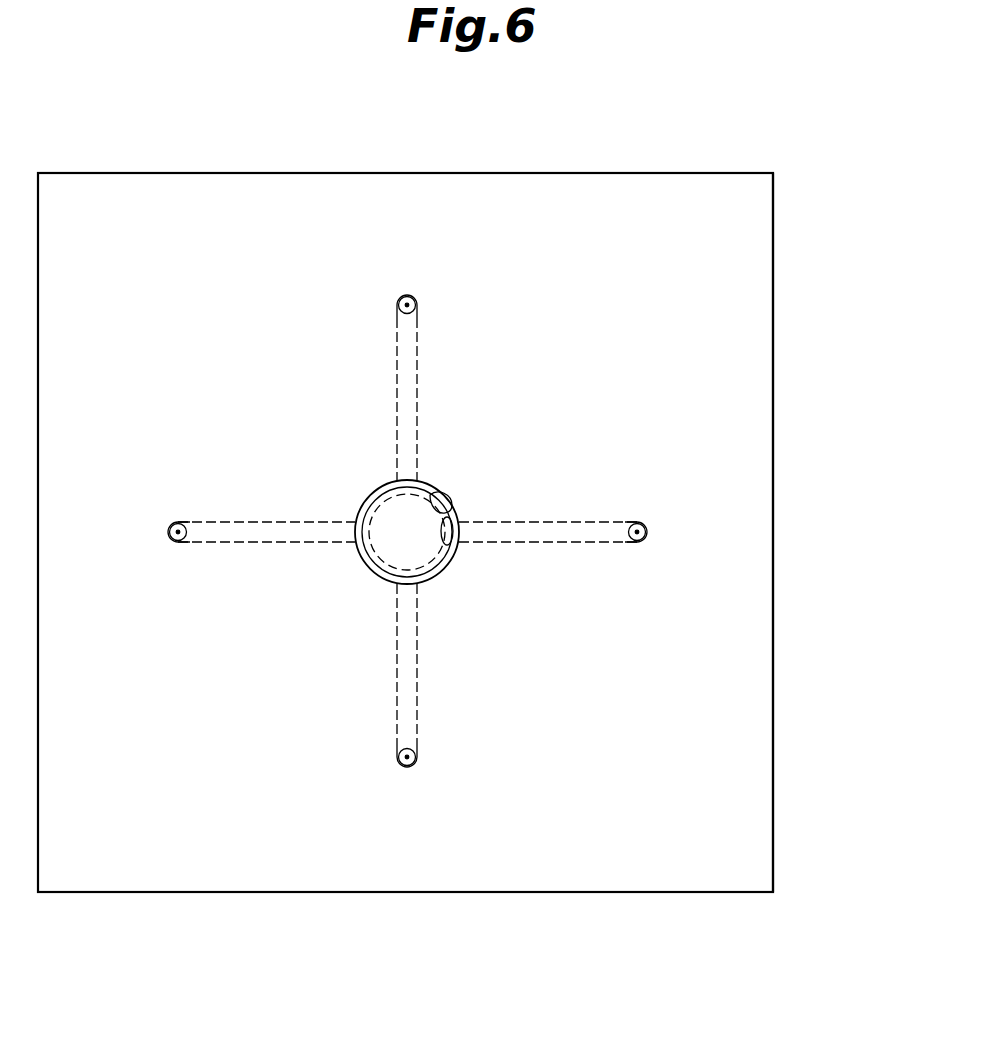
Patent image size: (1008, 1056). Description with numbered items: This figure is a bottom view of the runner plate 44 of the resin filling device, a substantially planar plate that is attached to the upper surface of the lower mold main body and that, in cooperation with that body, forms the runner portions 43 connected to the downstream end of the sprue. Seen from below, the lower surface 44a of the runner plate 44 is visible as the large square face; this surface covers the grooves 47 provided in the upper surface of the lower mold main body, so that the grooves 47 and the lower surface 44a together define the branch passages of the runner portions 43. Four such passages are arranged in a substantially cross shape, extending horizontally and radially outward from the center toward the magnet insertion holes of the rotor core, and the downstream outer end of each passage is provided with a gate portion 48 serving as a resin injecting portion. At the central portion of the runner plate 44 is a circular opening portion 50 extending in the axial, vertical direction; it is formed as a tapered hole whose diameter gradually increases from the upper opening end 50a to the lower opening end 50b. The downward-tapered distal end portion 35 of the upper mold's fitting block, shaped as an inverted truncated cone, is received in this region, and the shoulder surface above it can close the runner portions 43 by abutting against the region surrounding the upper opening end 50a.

The runner plate 44 is at (551, 172).
The lower surface of the runner plate 44a is at (752, 613).
The runner portions 43 is at (314, 524).
The grooves 47 is at (418, 400).
The gate portion 48 is at (415, 305).
The distal end portion 35 is at (362, 483).
The opening portion 50 is at (433, 507).
The lower opening end 50b is at (450, 500).
The upper opening end 50a is at (455, 548).